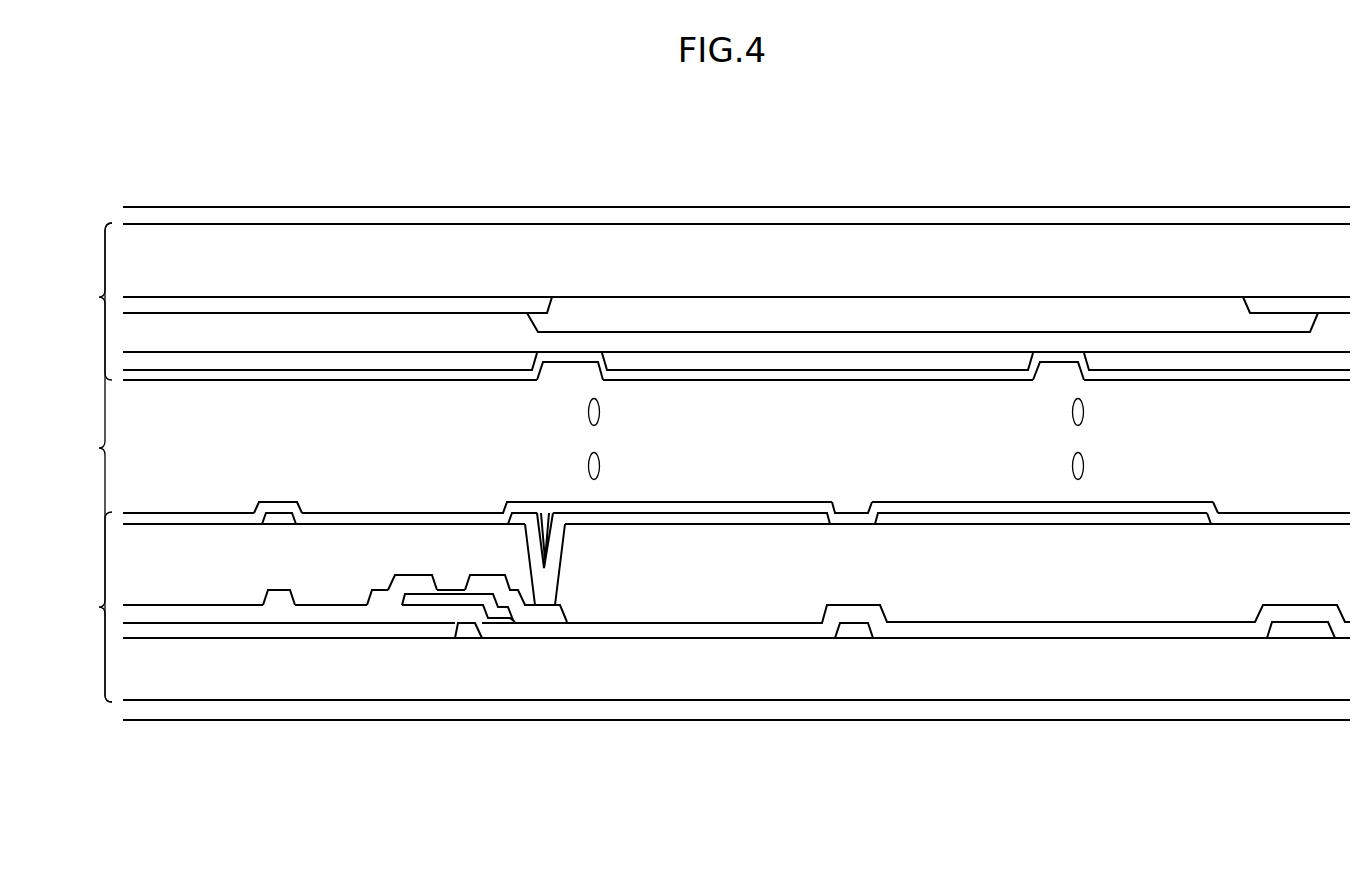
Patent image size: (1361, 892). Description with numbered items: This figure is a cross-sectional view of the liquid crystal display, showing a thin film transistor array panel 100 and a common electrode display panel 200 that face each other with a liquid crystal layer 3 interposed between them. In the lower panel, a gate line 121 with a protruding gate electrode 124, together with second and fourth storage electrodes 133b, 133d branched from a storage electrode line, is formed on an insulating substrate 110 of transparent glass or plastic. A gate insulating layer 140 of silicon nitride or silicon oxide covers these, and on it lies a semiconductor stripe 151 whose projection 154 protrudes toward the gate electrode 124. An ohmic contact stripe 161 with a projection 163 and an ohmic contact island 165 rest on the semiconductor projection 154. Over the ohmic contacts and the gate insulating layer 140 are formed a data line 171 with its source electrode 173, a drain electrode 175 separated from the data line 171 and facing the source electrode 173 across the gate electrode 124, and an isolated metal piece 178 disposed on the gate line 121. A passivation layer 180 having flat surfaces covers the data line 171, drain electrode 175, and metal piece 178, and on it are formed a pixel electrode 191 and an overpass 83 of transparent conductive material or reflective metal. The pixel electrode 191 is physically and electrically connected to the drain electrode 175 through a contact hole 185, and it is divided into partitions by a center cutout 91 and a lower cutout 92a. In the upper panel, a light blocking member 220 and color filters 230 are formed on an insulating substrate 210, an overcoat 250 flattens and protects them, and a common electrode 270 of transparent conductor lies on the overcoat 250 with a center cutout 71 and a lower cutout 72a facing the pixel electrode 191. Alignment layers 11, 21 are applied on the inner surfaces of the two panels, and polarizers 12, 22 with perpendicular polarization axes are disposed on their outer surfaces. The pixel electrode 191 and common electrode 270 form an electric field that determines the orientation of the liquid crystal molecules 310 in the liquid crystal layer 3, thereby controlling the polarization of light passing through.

The liquid crystal layer 3 is at (95, 462).
The alignment layer 11 is at (170, 520).
The polarizer 12 is at (140, 708).
The alignment layer 21 is at (163, 372).
The polarizer 22 is at (140, 210).
The center cutout 71 is at (1042, 376).
The lower cutout 72a is at (540, 376).
The overpass 83 is at (277, 520).
The center cutout 91 is at (1210, 518).
The lower cutout 92a is at (843, 520).
The thin film transistor array panel 100 is at (83, 607).
The insulating substrate 110 is at (997, 670).
The gate line 121 is at (188, 630).
The gate electrode 124 is at (468, 625).
The second storage electrode 133b is at (1298, 630).
The fourth storage electrode 133d is at (851, 628).
The gate insulating layer 140 is at (917, 630).
The semiconductor stripe 151 is at (415, 600).
The projection 154 is at (455, 605).
The ohmic contact stripe 161 is at (400, 597).
The projection 163 is at (425, 598).
The ohmic contact island 165 is at (487, 605).
The data line 171 is at (378, 597).
The source electrode 173 is at (414, 585).
The drain electrode 175 is at (548, 612).
The isolated metal piece 178 is at (284, 602).
The passivation layer 180 is at (750, 580).
The contact hole 185 is at (538, 545).
The pixel electrode 191 is at (680, 520).
The common electrode display panel 200 is at (83, 301).
The insulating substrate 210 is at (668, 240).
The light blocking member 220 is at (426, 305).
The color filter 230 is at (888, 308).
The overcoat 250 is at (780, 340).
The common electrode 270 is at (975, 362).
The liquid crystal molecule 310 is at (600, 413).